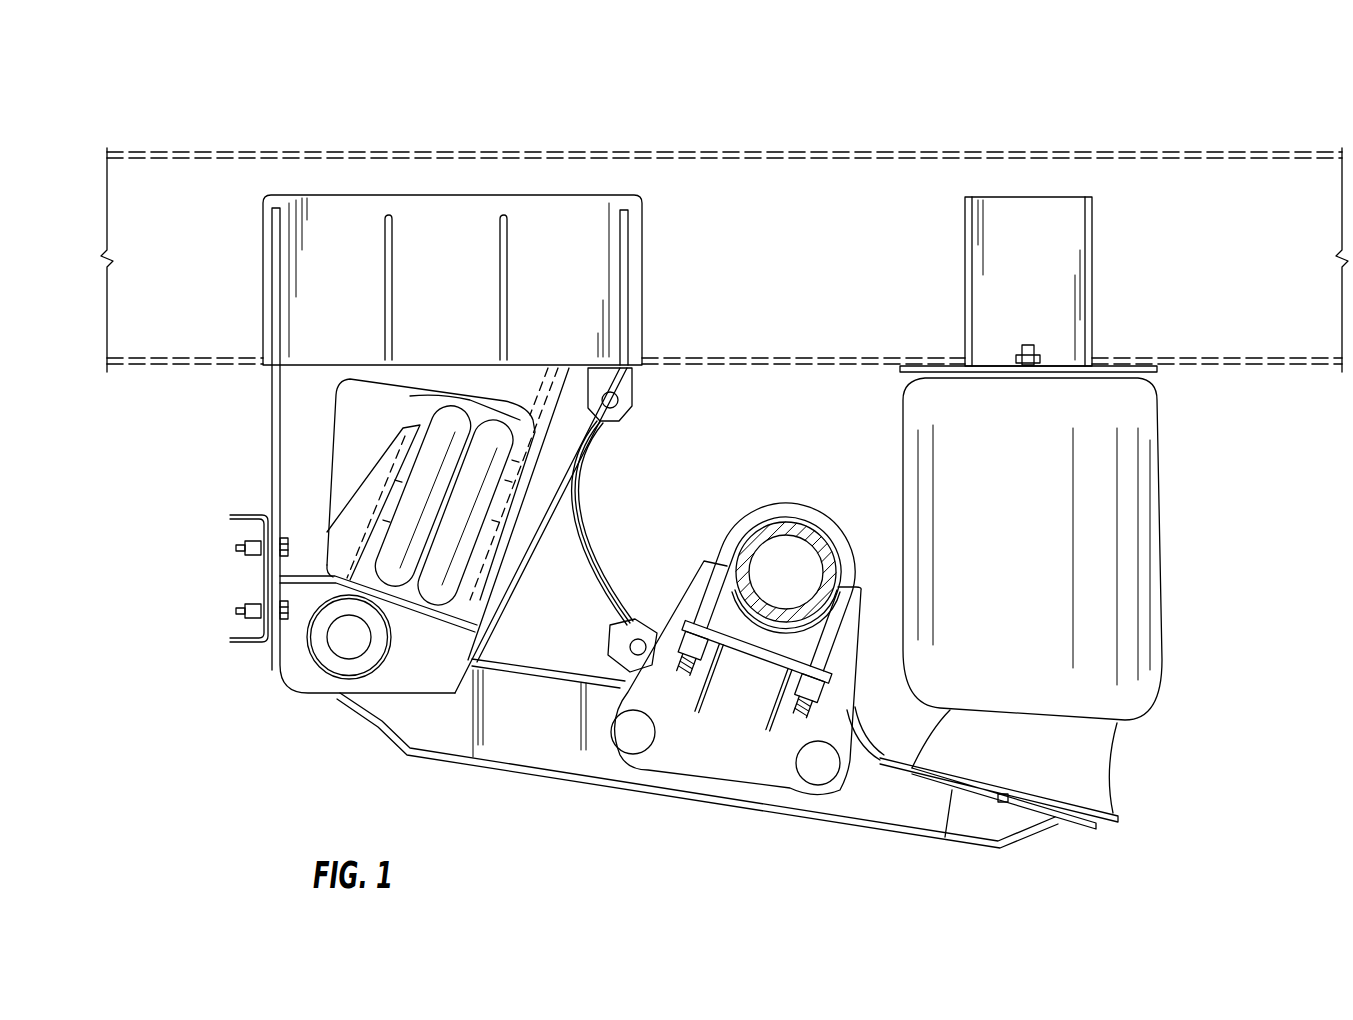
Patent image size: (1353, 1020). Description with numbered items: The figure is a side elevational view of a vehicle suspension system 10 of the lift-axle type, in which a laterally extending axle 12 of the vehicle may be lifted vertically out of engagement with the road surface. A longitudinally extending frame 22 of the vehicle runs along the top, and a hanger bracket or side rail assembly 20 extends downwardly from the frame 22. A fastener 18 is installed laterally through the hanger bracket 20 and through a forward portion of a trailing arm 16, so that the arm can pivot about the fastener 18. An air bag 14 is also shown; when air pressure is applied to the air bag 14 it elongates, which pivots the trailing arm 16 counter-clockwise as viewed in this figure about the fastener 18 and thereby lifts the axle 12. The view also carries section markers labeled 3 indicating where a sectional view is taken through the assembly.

The vehicle suspension system 10 is at (1265, 835).
The axle 12 is at (822, 530).
The air bag 14 is at (410, 396).
The trailing arm 16 is at (680, 800).
The fastener 18 is at (343, 656).
The hanger bracket 20 is at (272, 440).
The frame 22 is at (690, 148).
The section line 3- 3 is at (227, 637).